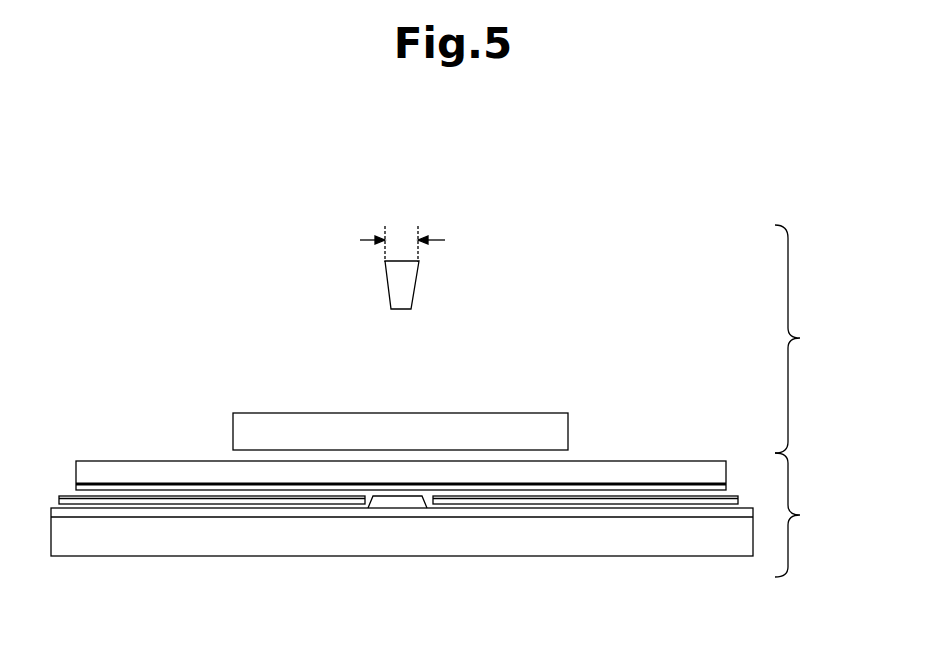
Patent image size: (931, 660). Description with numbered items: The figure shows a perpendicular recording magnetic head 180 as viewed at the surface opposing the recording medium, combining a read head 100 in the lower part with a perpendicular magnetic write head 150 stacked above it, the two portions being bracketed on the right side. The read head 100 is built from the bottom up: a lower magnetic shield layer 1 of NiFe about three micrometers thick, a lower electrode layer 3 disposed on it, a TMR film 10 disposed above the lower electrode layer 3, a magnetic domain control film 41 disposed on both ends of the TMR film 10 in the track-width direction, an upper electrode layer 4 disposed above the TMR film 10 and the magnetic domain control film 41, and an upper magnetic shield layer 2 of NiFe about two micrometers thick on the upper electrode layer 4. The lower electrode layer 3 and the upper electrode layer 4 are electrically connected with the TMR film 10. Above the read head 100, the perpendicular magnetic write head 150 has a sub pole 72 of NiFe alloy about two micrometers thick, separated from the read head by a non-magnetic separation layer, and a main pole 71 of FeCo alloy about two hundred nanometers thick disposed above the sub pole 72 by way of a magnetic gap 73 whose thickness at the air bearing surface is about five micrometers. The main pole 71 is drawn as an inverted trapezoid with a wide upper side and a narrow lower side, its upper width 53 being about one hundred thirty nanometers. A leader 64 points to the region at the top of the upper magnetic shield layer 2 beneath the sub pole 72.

The lower magnetic shield layer 1 is at (560, 540).
The upper magnetic shield layer 2 is at (628, 478).
The lower electrode layer 3 is at (712, 512).
The upper electrode layer 4 is at (680, 490).
The TMR film 10 is at (405, 498).
The magnetic domain control film 41 is at (258, 503).
The upper width 53 is at (402, 233).
The bonding surface 64 is at (388, 458).
The main pole 71 is at (404, 297).
The sub pole 72 is at (522, 430).
The magnetic gap 73 is at (400, 358).
The read head 100 is at (810, 515).
The perpendicular magnetic write head 150 is at (811, 339).
The perpendicular recording magnetic head 180 is at (226, 229).